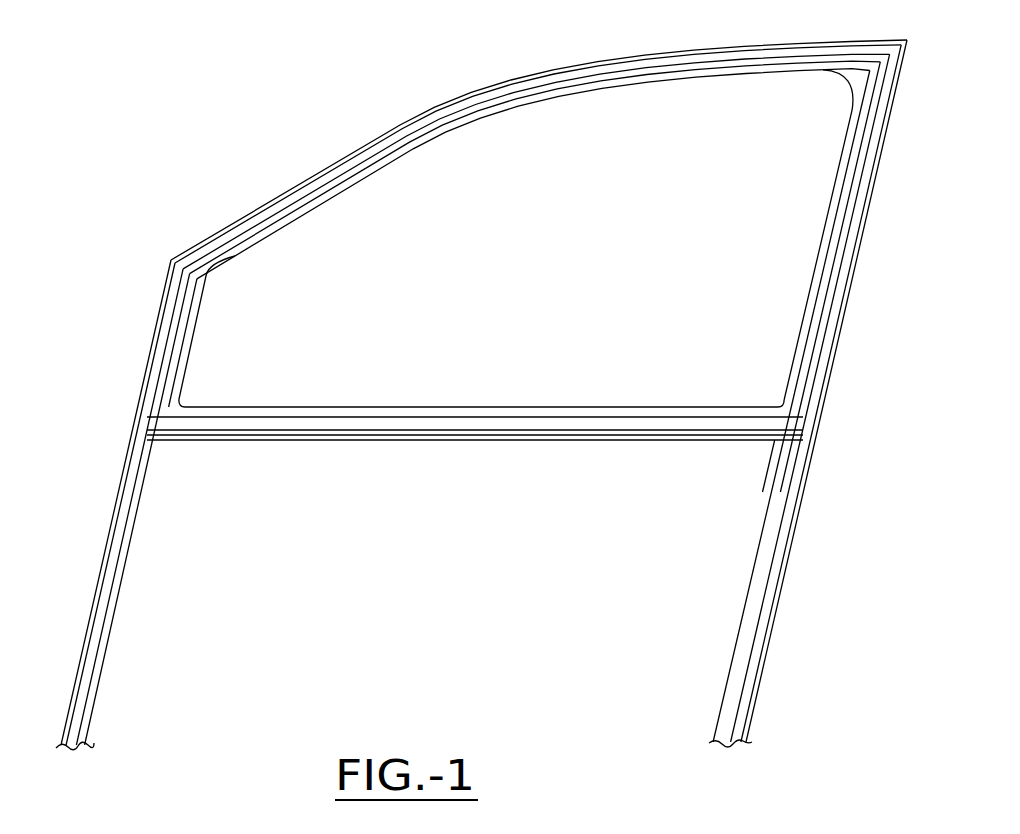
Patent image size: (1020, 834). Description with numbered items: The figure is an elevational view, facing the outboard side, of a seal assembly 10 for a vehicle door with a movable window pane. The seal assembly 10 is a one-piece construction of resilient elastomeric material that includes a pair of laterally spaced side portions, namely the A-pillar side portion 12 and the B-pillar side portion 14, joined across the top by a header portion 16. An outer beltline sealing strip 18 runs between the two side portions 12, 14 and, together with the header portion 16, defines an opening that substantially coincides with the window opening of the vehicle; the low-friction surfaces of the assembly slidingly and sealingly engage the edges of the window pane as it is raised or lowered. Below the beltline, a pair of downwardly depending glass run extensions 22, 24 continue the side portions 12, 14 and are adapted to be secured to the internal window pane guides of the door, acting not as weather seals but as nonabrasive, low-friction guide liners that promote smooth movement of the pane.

The seal assembly 10 is at (489, 381).
The A-pillar side portion 12 is at (168, 338).
The B-pillar side portion 14 is at (820, 343).
The header portion 16 is at (505, 80).
The outer beltline sealing strip 18 is at (503, 441).
The glass run extension 22 is at (95, 686).
The glass run extension 24 is at (732, 687).